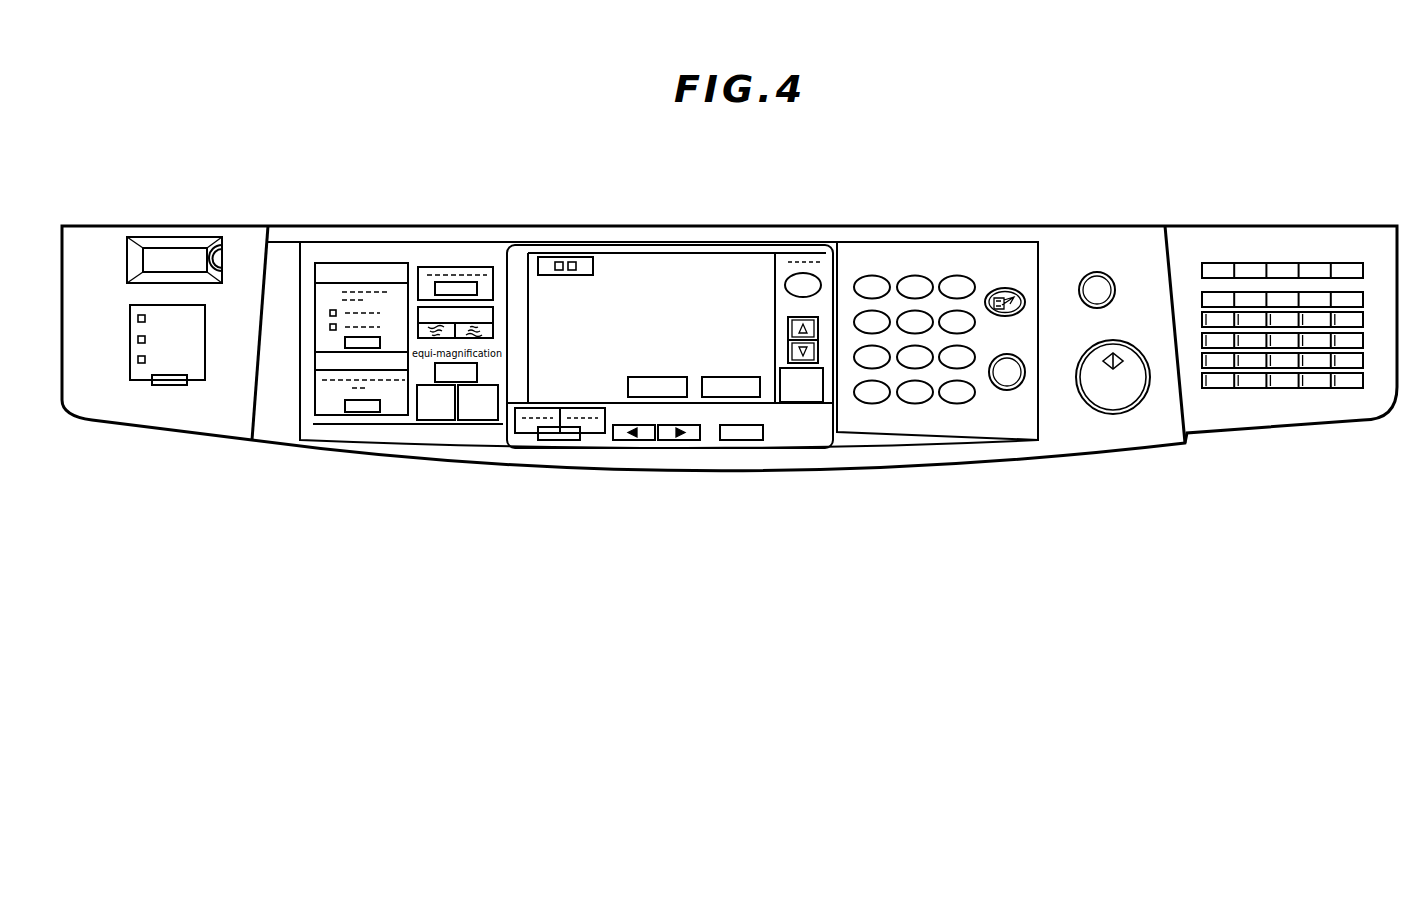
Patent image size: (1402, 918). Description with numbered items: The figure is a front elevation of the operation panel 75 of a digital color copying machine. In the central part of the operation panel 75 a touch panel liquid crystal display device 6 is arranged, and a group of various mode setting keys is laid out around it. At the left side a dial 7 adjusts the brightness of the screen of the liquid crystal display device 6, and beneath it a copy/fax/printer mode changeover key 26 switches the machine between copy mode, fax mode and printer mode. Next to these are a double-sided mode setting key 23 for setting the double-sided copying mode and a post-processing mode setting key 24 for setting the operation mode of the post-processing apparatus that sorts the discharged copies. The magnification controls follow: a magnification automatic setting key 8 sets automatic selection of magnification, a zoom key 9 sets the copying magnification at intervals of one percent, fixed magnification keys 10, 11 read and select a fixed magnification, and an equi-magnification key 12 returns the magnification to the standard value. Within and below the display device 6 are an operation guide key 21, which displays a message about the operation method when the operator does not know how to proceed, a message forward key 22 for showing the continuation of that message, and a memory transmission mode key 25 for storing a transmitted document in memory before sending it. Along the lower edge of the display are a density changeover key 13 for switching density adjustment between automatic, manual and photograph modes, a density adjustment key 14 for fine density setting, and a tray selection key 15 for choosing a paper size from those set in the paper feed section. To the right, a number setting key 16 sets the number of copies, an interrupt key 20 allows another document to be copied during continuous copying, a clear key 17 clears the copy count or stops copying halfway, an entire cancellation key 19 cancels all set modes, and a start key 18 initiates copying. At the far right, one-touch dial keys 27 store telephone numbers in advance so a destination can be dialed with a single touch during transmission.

The operation panel 75 is at (1222, 218).
The dial 7 is at (217, 258).
The copy/fax/printer mode changeover key 26 is at (173, 387).
The double-sided mode setting key 23 is at (378, 263).
The post-processing mode setting key 24 is at (363, 413).
The magnification automatic setting key 8 is at (447, 265).
The zoom key 9 is at (481, 309).
The equi-magnification key 12 is at (479, 370).
The fixed magnification key 10 is at (437, 421).
The fixed magnification key 11 is at (468, 421).
The touch panel liquid crystal display device 6 is at (658, 265).
The operation guide key 21 is at (818, 274).
The message forward key 22 is at (788, 327).
The memory transmission mode key 25 is at (812, 402).
The density changeover key 13 is at (556, 441).
The density adjustment key 14 is at (648, 441).
The tray selection key 15 is at (753, 441).
The number setting key 16 is at (922, 274).
The interrupt key 20 is at (1029, 298).
The clear key 17 is at (1010, 391).
The entire cancellation key 19 is at (1097, 272).
The start key 18 is at (1115, 414).
The one-touch dial key 27 is at (1287, 390).